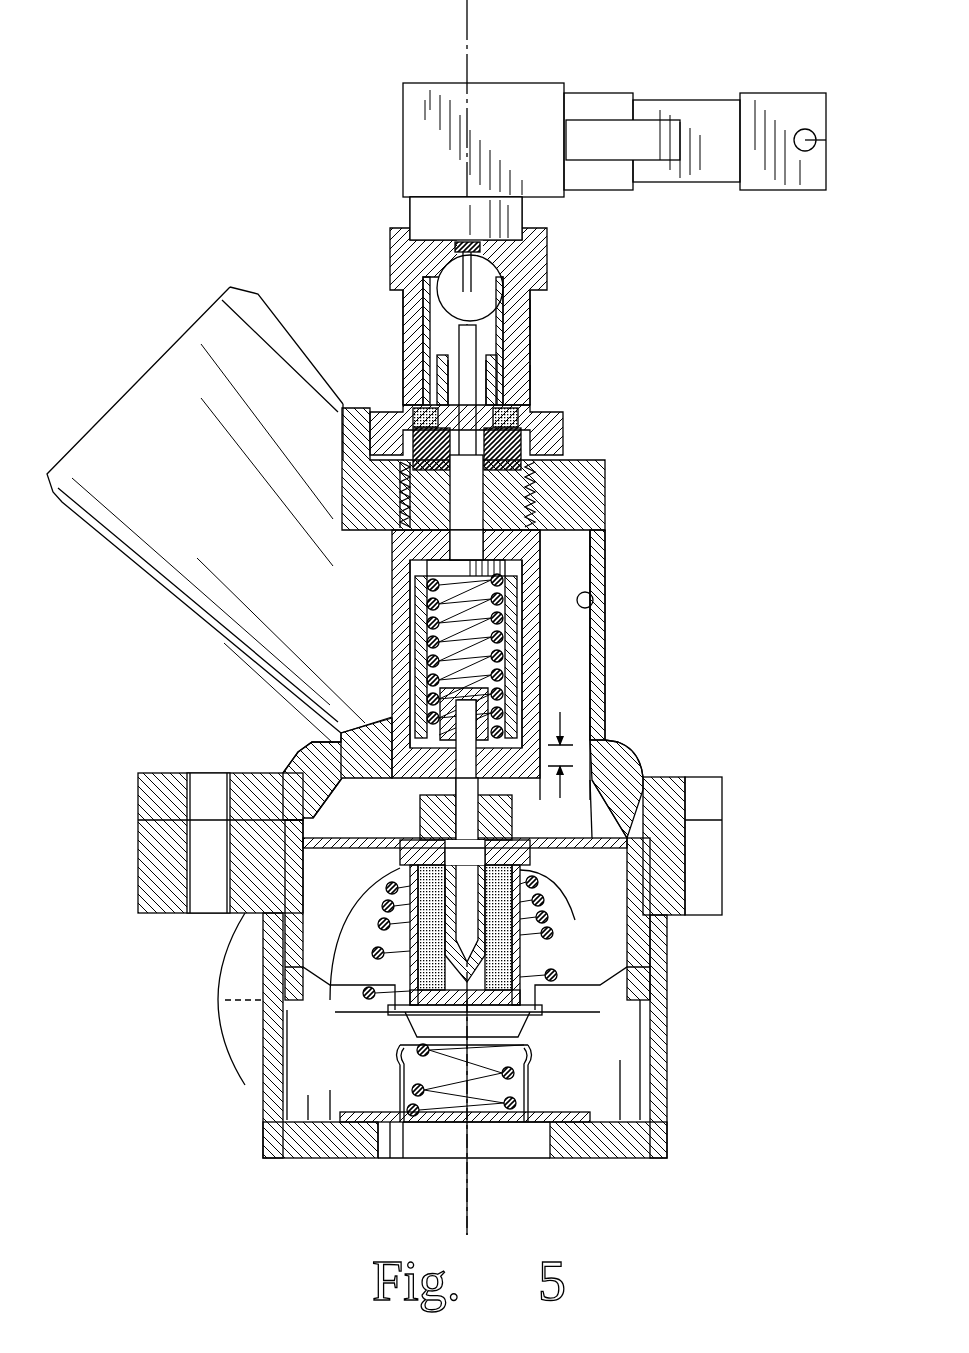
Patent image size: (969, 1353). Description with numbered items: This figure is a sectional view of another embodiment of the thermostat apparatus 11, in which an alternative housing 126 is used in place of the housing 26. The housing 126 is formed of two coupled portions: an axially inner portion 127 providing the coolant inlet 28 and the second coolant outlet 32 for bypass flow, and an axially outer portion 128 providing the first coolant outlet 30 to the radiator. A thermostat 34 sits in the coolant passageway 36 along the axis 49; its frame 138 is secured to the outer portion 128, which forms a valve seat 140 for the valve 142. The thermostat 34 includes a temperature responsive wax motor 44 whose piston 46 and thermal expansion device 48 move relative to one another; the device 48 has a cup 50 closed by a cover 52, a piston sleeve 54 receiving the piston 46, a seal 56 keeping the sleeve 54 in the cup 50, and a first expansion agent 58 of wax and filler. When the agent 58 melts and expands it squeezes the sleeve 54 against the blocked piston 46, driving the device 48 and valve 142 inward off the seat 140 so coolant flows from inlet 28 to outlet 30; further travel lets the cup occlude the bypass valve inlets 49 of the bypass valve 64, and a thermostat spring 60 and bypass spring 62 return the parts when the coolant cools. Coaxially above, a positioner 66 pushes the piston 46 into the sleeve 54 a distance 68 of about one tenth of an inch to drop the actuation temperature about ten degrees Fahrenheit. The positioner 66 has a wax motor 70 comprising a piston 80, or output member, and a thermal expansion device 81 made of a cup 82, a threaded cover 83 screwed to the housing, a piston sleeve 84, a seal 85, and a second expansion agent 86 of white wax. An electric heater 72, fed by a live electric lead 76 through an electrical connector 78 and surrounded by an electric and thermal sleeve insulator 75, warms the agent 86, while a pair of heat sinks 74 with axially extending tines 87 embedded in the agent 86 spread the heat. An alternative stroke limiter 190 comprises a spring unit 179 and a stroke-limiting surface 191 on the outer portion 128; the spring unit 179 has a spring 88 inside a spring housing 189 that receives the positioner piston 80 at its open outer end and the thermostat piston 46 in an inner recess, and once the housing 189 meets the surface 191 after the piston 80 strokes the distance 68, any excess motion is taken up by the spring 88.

The thermostat apparatus 11 is at (150, 90).
The axis 49 is at (478, 30).
The electrical connector 78 is at (537, 84).
The live electric lead 76 is at (455, 243).
The electric heater 72 is at (540, 268).
The electric and thermal sleeve insulator 75 is at (402, 303).
The tines 87 is at (475, 352).
The wax motor 70 is at (546, 318).
The cup 82 is at (405, 352).
The heat sinks 74 is at (500, 352).
The second expansion agent 86 is at (405, 405).
The positioner 66 is at (582, 365).
The thermal expansion device 81 is at (545, 378).
The piston sleeve 84 is at (545, 425).
The seal 85 is at (535, 480).
The housing 26 is at (612, 528).
The first coolant outlet 30 is at (118, 528).
The threaded cover 83 is at (400, 538).
The piston 80 is at (400, 565).
The spring 88 is at (415, 615).
The coolant passageway 36 is at (593, 600).
The spring unit 179 is at (412, 650).
The axially outer portion 128 is at (597, 663).
The spring housing 189 is at (412, 677).
The distance 68 is at (562, 720).
The alternative housing 126 is at (630, 760).
The alternative stroke limiter 190 is at (418, 752).
The thermostat 34 is at (575, 805).
The seal 56 is at (400, 812).
The cover 52 is at (430, 812).
The stroke-limiting surface 191 is at (512, 785).
The valve 142 is at (392, 838).
The piston 46 is at (620, 845).
The valve seat 140 is at (305, 852).
The temperature responsive wax motor 44 is at (558, 872).
The piston sleeve 54 is at (345, 878).
The thermostat spring 60 is at (545, 895).
The thermal expansion device 48 is at (532, 950).
The cup 50 is at (398, 965).
The first expansion agent 58 is at (550, 985).
The frame 138 is at (655, 1015).
The axially inner portion 127 is at (665, 1078).
The coolant inlet 28 is at (397, 1100).
The bypass spring 62 is at (530, 1075).
The bypass valve 64 is at (570, 1112).
The second coolant outlet 32 is at (542, 1158).